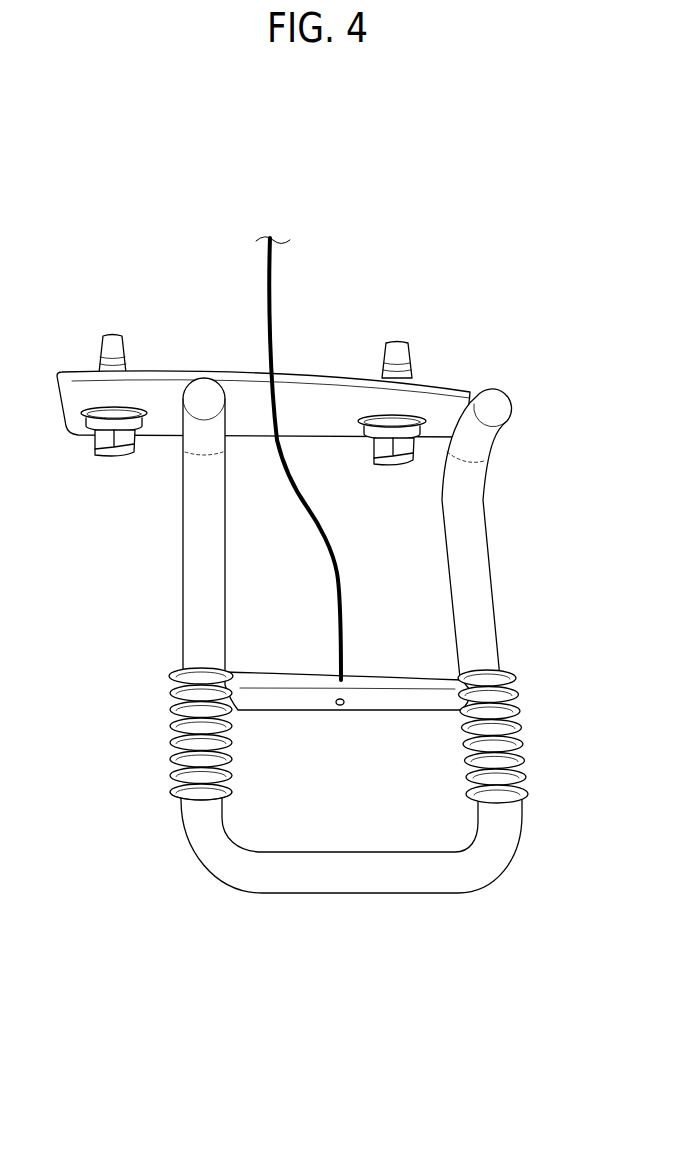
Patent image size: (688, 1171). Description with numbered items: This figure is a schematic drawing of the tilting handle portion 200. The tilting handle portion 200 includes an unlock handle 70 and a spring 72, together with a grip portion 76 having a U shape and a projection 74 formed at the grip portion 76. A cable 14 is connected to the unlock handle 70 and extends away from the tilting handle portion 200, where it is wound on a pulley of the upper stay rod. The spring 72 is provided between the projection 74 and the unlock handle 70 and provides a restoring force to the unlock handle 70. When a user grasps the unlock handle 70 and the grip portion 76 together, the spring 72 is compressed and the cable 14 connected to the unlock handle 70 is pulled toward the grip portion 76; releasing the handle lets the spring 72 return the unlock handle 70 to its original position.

The tilting handle portion 200 is at (333, 177).
The cable 14 is at (268, 296).
The unlock handle 70 is at (393, 682).
The spring 72 is at (176, 741).
The projection 74 is at (175, 802).
The grip portion 76 is at (353, 877).